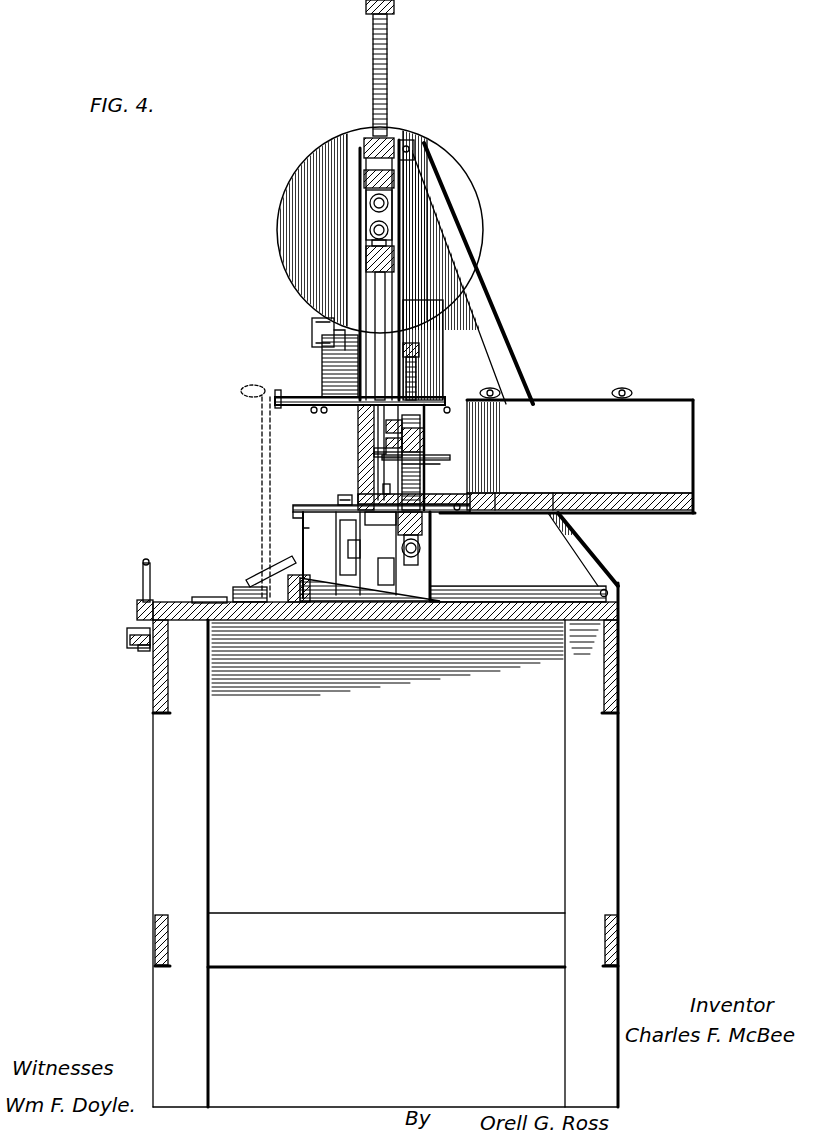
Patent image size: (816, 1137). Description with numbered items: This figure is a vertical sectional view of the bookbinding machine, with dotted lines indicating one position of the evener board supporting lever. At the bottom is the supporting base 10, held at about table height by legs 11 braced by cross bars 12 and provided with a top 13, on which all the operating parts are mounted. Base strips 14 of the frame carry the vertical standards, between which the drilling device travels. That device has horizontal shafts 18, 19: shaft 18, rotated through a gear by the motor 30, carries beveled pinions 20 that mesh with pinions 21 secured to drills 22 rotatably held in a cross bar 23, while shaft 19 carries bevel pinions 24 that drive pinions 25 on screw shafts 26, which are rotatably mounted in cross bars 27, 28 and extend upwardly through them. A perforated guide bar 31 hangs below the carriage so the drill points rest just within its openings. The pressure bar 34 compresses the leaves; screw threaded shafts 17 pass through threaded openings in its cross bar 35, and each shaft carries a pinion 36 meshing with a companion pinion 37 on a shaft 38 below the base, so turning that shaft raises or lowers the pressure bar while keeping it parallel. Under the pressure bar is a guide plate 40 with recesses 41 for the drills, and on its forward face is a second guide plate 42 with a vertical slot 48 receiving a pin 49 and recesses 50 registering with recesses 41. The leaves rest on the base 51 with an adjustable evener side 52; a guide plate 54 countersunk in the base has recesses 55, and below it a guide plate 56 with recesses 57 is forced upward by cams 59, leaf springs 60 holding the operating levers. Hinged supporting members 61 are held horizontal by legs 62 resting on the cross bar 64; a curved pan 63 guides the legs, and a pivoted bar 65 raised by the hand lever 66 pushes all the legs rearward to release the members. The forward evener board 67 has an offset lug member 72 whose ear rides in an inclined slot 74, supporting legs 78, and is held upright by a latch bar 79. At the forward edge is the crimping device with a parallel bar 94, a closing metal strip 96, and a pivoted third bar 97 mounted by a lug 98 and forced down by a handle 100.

The supporting base 10 is at (406, 659).
The legs 11 is at (168, 818).
The cross bars 12 is at (157, 937).
The top 13 is at (620, 611).
The base strips 14 is at (205, 597).
The screw threaded shafts 17 is at (421, 470).
The shaft 18 is at (370, 230).
The shaft 19 is at (370, 203).
The beveled pinions 20 is at (400, 228).
The pinions 21 is at (368, 250).
The drills 22 is at (380, 292).
The cross bar 23 is at (394, 262).
The bevel pinions 24 is at (394, 203).
The pinions 25 is at (364, 180).
The screw shafts 26 is at (388, 62).
The cross bar 27 is at (408, 165).
The cross bar 28 is at (394, 148).
The motor 30 is at (313, 353).
The guide bar 31 is at (358, 395).
The pressure bar 34 is at (420, 440).
The cross bar 35 is at (419, 350).
The pinion 36 is at (422, 532).
The pinions 37 is at (428, 557).
The shaft 38 is at (421, 549).
The guide plate 40 is at (440, 457).
The recesses 41 is at (400, 463).
The second guide plate 42 is at (386, 427).
The vertical slot 48 is at (424, 434).
The pin 49 is at (386, 443).
The recesses 50 is at (380, 455).
The base 51 is at (580, 497).
The evener side 52 is at (693, 450).
The guide plate 54 is at (460, 497).
The recesses 55 is at (375, 493).
The guide plate 56 is at (380, 553).
The recesses 57 is at (389, 479).
The cams 59 is at (360, 548).
The leaf springs 60 is at (394, 572).
The supporting members 61 is at (306, 507).
The legs 62 is at (303, 524).
The curved pan 63 is at (345, 603).
The cross bar 64 is at (300, 603).
The bar 65 is at (298, 565).
The hand lever 66 is at (258, 578).
The forward evener board 67 is at (375, 447).
The offset lug member 72 is at (338, 500).
The inclined slot 74 is at (342, 521).
The supporting legs 78 is at (290, 397).
The latch bar 79 is at (262, 500).
The parallel bar 94 is at (132, 645).
The metal strip 96 is at (141, 651).
The third bar 97 is at (138, 610).
The lug 98 is at (128, 636).
The handle 100 is at (148, 560).